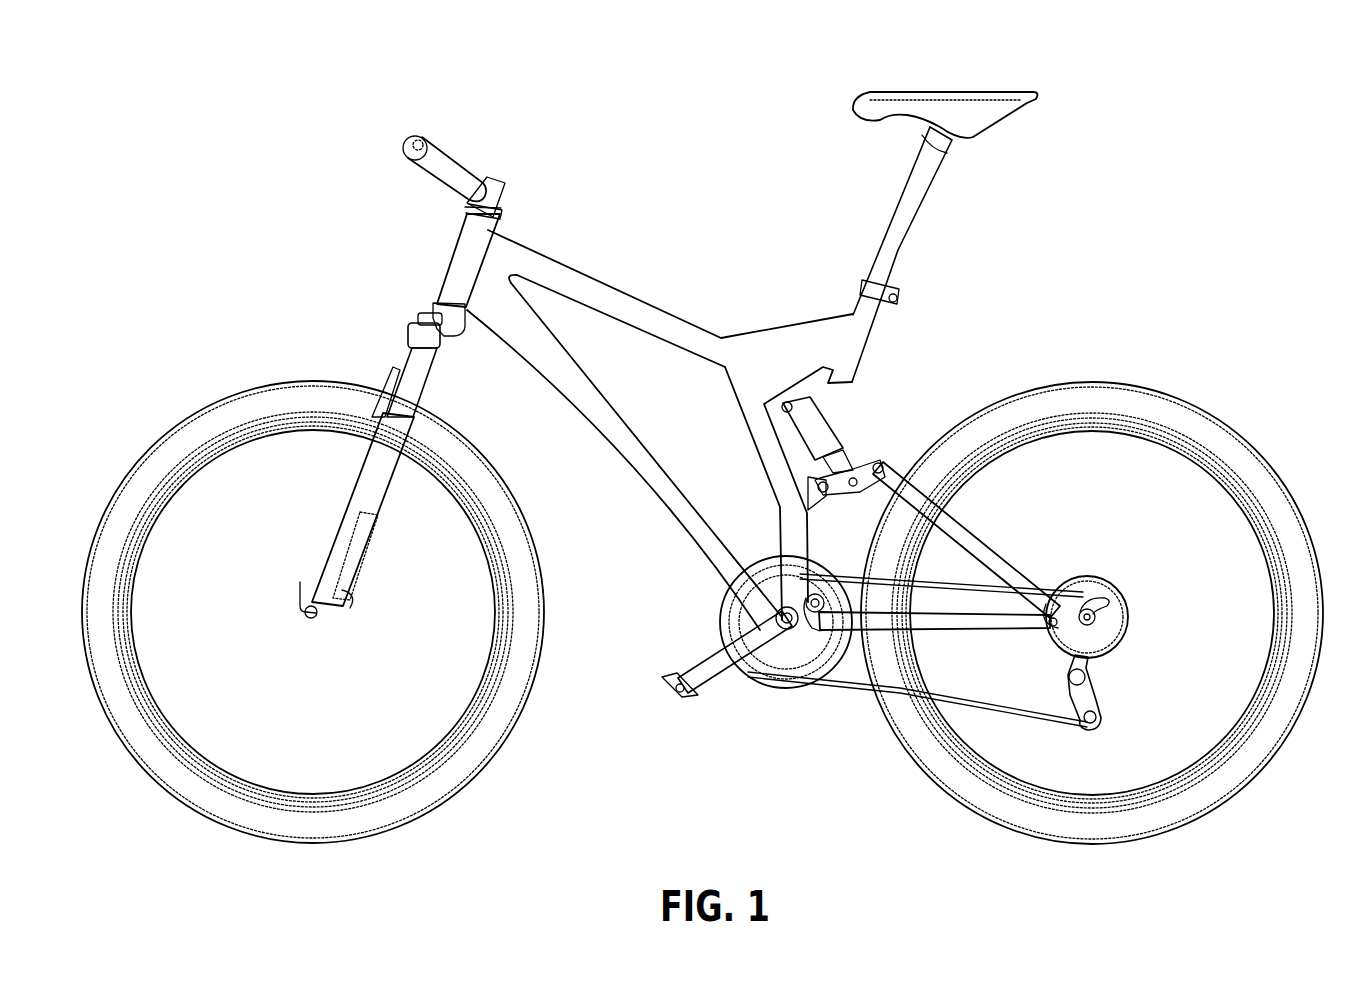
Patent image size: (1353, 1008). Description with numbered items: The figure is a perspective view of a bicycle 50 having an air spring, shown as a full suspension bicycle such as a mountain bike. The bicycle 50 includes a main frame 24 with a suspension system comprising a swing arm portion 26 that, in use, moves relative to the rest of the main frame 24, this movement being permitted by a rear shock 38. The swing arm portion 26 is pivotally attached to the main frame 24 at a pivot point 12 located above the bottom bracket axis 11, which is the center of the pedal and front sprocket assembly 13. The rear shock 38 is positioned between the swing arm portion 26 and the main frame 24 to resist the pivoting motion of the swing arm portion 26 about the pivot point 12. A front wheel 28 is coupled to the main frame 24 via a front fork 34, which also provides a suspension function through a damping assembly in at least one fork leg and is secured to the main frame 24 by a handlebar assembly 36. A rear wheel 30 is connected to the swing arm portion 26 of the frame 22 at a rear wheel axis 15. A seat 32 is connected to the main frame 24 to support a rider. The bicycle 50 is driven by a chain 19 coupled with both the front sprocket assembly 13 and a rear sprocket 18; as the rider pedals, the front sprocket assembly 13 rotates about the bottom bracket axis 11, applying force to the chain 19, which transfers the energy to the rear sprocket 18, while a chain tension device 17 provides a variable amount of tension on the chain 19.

The bicycle 50 is at (645, 122).
The frame 22 is at (1032, 212).
The main frame 24 is at (655, 302).
The swing arm portion 26 is at (1008, 562).
The front wheel 28 is at (315, 380).
The rear wheel 30 is at (1122, 380).
The seat 32 is at (962, 90).
The front fork 34 is at (330, 525).
The handlebar assembly 36 is at (403, 148).
The rear shock 38 is at (830, 440).
The bottom bracket axis 11 is at (787, 635).
The pivot point 12 is at (818, 598).
The front sprocket assembly 13 is at (753, 672).
The rear wheel axis 15 is at (1123, 613).
The chain tension device 17 is at (1093, 695).
The rear sprocket 18 is at (1113, 633).
The chain 19 is at (1045, 712).